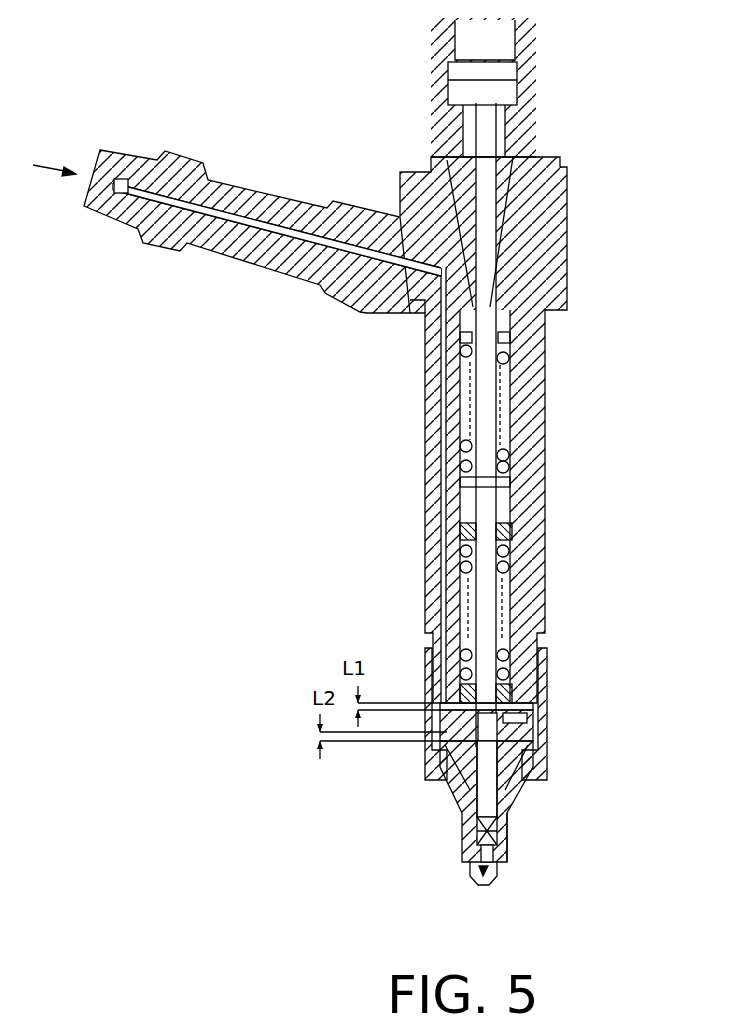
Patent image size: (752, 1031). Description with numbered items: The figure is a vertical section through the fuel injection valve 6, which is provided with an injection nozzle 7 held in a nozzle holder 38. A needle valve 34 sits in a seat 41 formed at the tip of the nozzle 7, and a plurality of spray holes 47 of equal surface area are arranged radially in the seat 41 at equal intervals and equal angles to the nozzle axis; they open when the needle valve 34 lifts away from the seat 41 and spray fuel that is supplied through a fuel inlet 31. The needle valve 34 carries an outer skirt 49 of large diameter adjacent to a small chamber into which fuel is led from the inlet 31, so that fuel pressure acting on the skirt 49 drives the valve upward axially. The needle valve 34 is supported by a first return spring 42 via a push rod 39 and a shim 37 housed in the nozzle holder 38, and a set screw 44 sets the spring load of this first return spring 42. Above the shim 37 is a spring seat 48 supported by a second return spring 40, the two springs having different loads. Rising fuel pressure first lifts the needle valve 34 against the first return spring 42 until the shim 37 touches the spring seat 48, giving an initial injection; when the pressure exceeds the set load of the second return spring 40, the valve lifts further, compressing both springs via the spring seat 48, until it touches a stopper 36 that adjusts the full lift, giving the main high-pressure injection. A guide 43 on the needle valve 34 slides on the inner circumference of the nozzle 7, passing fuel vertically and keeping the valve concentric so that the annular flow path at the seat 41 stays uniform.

The fuel injection valve 6 is at (424, 555).
The injection nozzle 7 is at (457, 802).
The fuel inlet 31 is at (90, 172).
The needle valve 34 is at (507, 800).
The stopper 36 is at (521, 722).
The shim 37 is at (545, 702).
The nozzle holder 38 is at (530, 608).
The push rod 39 is at (483, 588).
The second return spring 40 is at (527, 553).
The seat 41 is at (473, 867).
The first return spring 42 is at (520, 310).
The guide 43 is at (467, 827).
The set screw 44 is at (520, 160).
The spray holes 47 is at (500, 867).
The spring seat 48 is at (545, 675).
The outer skirt 49 is at (485, 793).